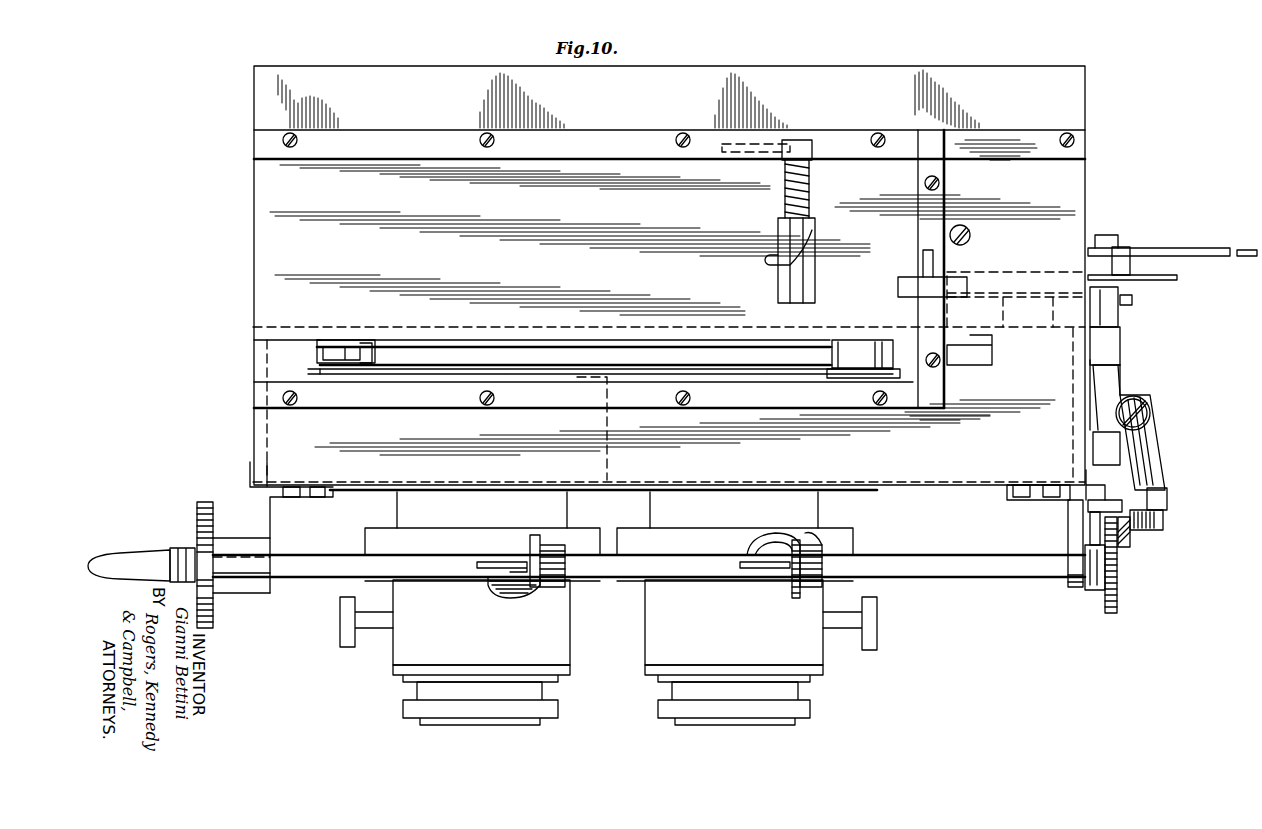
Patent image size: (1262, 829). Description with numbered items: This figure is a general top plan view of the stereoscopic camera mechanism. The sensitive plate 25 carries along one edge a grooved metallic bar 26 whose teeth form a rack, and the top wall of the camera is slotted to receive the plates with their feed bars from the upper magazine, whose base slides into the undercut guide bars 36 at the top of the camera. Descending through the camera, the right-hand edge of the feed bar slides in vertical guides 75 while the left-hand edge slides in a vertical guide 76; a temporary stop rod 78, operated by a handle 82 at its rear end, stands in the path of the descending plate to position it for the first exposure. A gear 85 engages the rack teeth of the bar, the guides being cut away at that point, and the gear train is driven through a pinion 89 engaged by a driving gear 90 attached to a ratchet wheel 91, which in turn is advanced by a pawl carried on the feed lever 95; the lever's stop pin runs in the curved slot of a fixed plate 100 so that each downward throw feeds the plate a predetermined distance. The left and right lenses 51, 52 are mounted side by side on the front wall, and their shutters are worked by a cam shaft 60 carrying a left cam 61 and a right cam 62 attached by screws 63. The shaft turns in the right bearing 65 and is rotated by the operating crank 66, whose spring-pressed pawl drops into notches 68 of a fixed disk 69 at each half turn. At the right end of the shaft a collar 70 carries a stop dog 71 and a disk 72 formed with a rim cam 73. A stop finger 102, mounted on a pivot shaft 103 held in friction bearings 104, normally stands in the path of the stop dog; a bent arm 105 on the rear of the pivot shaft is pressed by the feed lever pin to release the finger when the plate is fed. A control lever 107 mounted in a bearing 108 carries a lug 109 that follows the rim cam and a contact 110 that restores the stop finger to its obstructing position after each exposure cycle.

The glass plate 25 is at (477, 358).
The grooved metallic bar 26 is at (868, 366).
The undercut guide bars 36 is at (669, 271).
The left lens 51 is at (455, 652).
The right lens 52 is at (761, 652).
The cam shaft 60 is at (918, 578).
The left cam 61 is at (522, 598).
The right cam 62 is at (795, 598).
The screws 63 is at (550, 592).
The right bearing 65 is at (1068, 584).
The operating crank 66 is at (168, 548).
The notches 68 is at (205, 546).
The fixed disk 69 is at (205, 502).
The collar 70 is at (1095, 592).
The stop dog 71 is at (1090, 530).
The disk 72 is at (1120, 600).
The rim cam 73 is at (1133, 540).
The vertical guides 75 is at (860, 342).
The vertical guide 76 is at (355, 345).
The temporary stop rod 78 is at (790, 350).
The handle 82 is at (780, 153).
The gear 85 is at (985, 365).
The pinion 89 is at (905, 276).
The driving gear 90 is at (988, 290).
The ratchet wheel 91 is at (1038, 272).
The feed lever 95 is at (1197, 250).
The fixed plate 100 is at (1178, 278).
The stop finger 102 is at (1088, 507).
The pivot shaft 103 is at (1093, 422).
The bearings 104 is at (1095, 450).
The bent arm 105 is at (1134, 300).
The control lever 107 is at (1168, 440).
The bearing 108 is at (1148, 400).
The lug 109 is at (1160, 530).
The contact 110 is at (1168, 492).